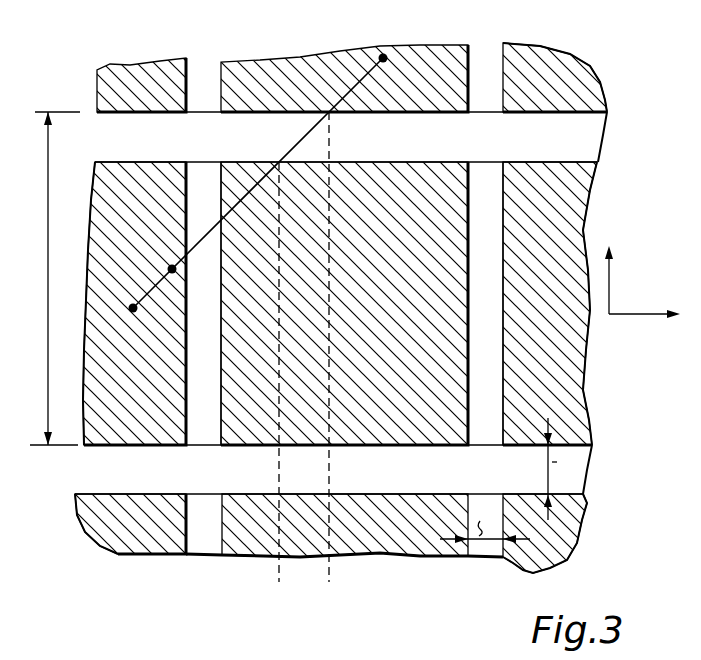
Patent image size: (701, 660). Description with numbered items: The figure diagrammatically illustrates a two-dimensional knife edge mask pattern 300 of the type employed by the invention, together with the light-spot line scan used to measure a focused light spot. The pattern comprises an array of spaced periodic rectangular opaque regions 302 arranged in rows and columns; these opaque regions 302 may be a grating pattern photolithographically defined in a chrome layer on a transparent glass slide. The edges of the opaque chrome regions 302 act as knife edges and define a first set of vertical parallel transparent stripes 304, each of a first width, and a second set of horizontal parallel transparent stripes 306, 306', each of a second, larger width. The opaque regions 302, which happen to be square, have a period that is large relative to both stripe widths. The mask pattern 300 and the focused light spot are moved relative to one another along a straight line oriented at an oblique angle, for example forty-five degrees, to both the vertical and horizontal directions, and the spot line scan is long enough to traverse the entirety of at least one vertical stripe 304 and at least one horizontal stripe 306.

The knife edge mask pattern 300 is at (418, 28).
The rectangular opaque regions 302 is at (149, 66).
The vertical parallel transparent stripes 304 is at (218, 307).
The horizontal parallel transparent stripes 306 is at (333, 469).
The horizontal transparent stripe 306' is at (351, 137).